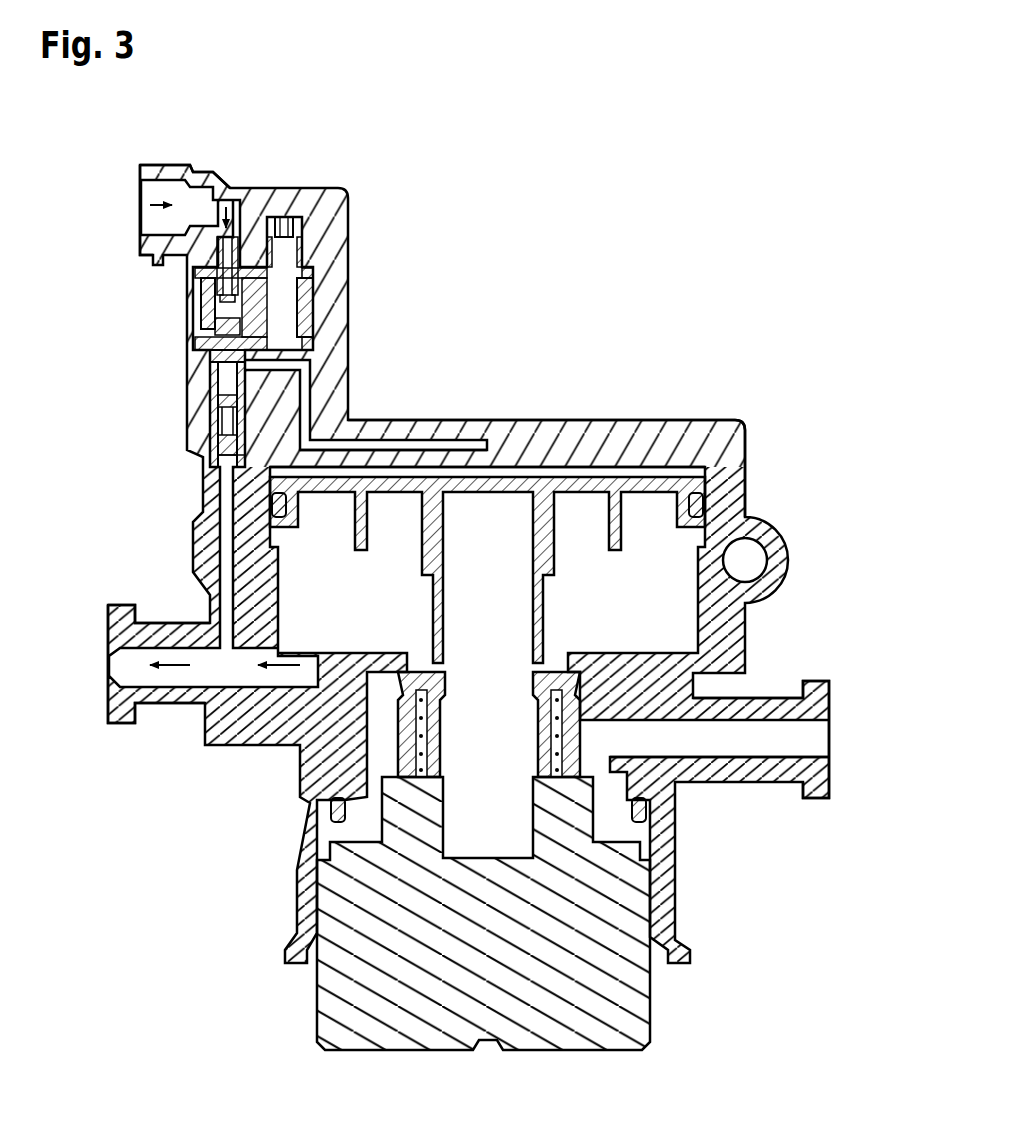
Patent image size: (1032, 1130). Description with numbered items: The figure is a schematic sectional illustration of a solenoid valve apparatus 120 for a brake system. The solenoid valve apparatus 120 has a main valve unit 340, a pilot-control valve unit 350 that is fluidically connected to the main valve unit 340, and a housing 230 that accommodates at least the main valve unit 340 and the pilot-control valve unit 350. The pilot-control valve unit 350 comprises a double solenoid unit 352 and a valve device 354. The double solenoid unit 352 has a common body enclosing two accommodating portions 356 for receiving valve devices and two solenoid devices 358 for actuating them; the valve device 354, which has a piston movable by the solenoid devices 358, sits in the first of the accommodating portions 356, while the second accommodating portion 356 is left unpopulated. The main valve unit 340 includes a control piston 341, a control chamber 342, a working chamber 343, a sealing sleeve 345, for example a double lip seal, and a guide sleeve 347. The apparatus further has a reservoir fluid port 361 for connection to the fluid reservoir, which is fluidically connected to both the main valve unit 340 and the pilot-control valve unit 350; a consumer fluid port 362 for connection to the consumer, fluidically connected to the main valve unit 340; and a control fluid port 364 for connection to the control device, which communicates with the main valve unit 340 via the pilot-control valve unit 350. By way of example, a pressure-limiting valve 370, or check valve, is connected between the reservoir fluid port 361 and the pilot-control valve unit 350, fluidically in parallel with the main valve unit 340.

The solenoid valve apparatus 120 is at (678, 148).
The housing 230 is at (692, 433).
The main valve unit 340 is at (786, 630).
The control piston 341 is at (518, 485).
The control chamber 342 is at (603, 482).
The working chamber 343 is at (650, 580).
The sealing sleeve 345 is at (437, 687).
The guide sleeve 347 is at (373, 822).
The pilot-control valve unit 350 is at (289, 231).
The double solenoid unit 352 is at (318, 259).
The valve device 354 is at (210, 354).
The accommodating portion 356 is at (283, 252).
The solenoid device 358 is at (207, 308).
The reservoir fluid port 361 is at (836, 720).
The consumer fluid port 362 is at (93, 680).
The control fluid port 364 is at (134, 205).
The pressure-limiting valve 370 is at (207, 437).